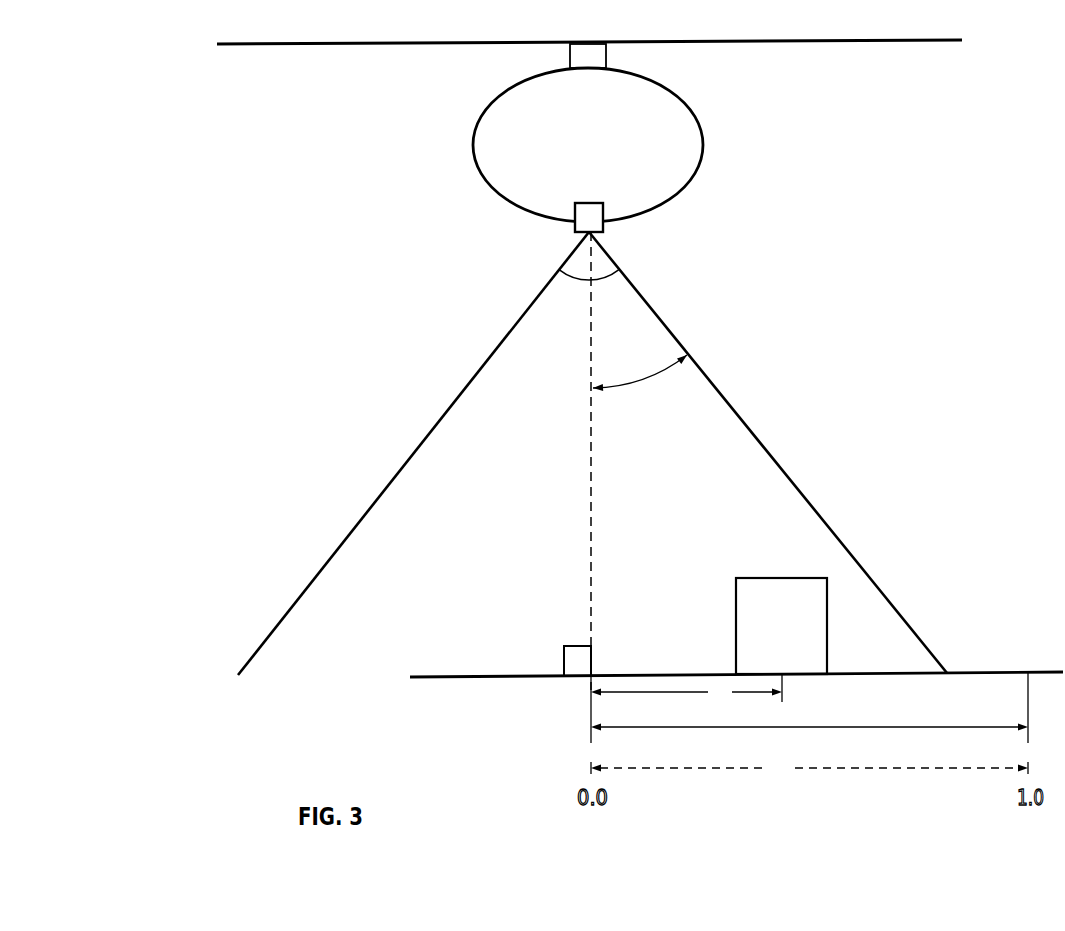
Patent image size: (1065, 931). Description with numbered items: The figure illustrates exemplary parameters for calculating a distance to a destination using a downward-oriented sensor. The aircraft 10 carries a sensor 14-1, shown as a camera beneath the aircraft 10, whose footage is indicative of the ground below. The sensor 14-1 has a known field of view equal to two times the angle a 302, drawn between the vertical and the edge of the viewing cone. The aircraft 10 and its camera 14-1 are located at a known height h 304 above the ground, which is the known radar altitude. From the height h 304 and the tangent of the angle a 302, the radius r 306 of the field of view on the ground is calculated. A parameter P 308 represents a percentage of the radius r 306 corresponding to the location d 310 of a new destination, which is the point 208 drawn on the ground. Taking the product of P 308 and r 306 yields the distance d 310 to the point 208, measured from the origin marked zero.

The aircraft 10 is at (684, 99).
The sensor 14-1 is at (605, 227).
The angle a 302 is at (623, 390).
The height h 304 is at (593, 523).
The point 208 is at (745, 578).
The location d 310 is at (628, 693).
The radius r 306 is at (885, 728).
The parameter P 308 is at (675, 770).